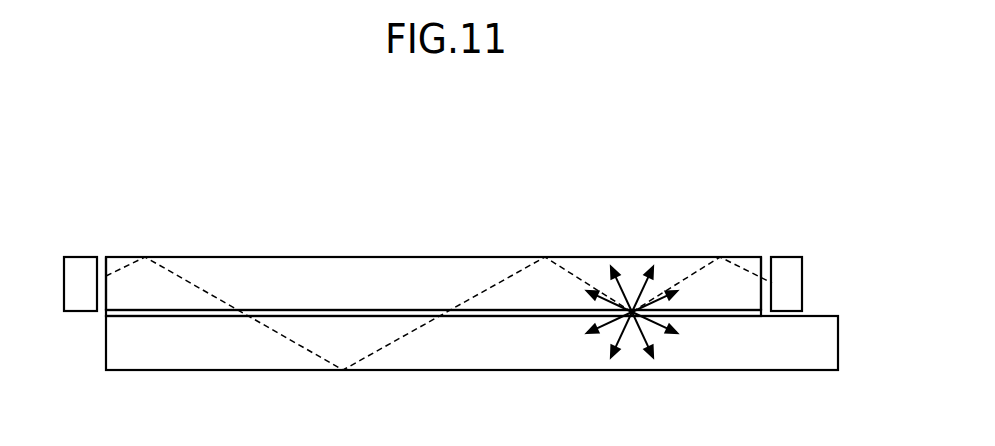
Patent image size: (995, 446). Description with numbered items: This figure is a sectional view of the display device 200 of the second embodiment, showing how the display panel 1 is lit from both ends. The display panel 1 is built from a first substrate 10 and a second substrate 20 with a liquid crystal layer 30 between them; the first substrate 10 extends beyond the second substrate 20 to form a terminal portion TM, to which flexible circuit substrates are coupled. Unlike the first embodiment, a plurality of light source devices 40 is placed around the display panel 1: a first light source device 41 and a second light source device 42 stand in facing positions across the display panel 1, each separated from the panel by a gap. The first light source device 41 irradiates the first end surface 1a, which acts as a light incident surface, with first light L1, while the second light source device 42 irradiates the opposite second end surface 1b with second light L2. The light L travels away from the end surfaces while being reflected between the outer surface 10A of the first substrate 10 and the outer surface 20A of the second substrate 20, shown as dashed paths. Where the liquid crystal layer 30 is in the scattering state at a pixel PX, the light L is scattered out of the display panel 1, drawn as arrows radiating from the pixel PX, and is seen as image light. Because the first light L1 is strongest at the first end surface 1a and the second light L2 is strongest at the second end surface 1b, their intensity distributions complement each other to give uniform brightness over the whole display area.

The display panel 1 is at (448, 282).
The first end surface 1a is at (100, 257).
The second end surface 1b is at (764, 257).
The first substrate 10 is at (472, 374).
The outer surface of the first substrate 10A is at (328, 372).
The second substrate 20 is at (433, 254).
The outer surface of the second substrate 20A is at (325, 257).
The liquid crystal layer 30 is at (106, 316).
The light source device 40 is at (437, 255).
The first light source device 41 is at (80, 268).
The second light source device 42 is at (785, 257).
The display device 200 is at (649, 175).
The light L is at (439, 284).
The first light L1 is at (203, 287).
The second light L2 is at (673, 285).
The pixel PX is at (655, 332).
The terminal portion TM is at (820, 330).